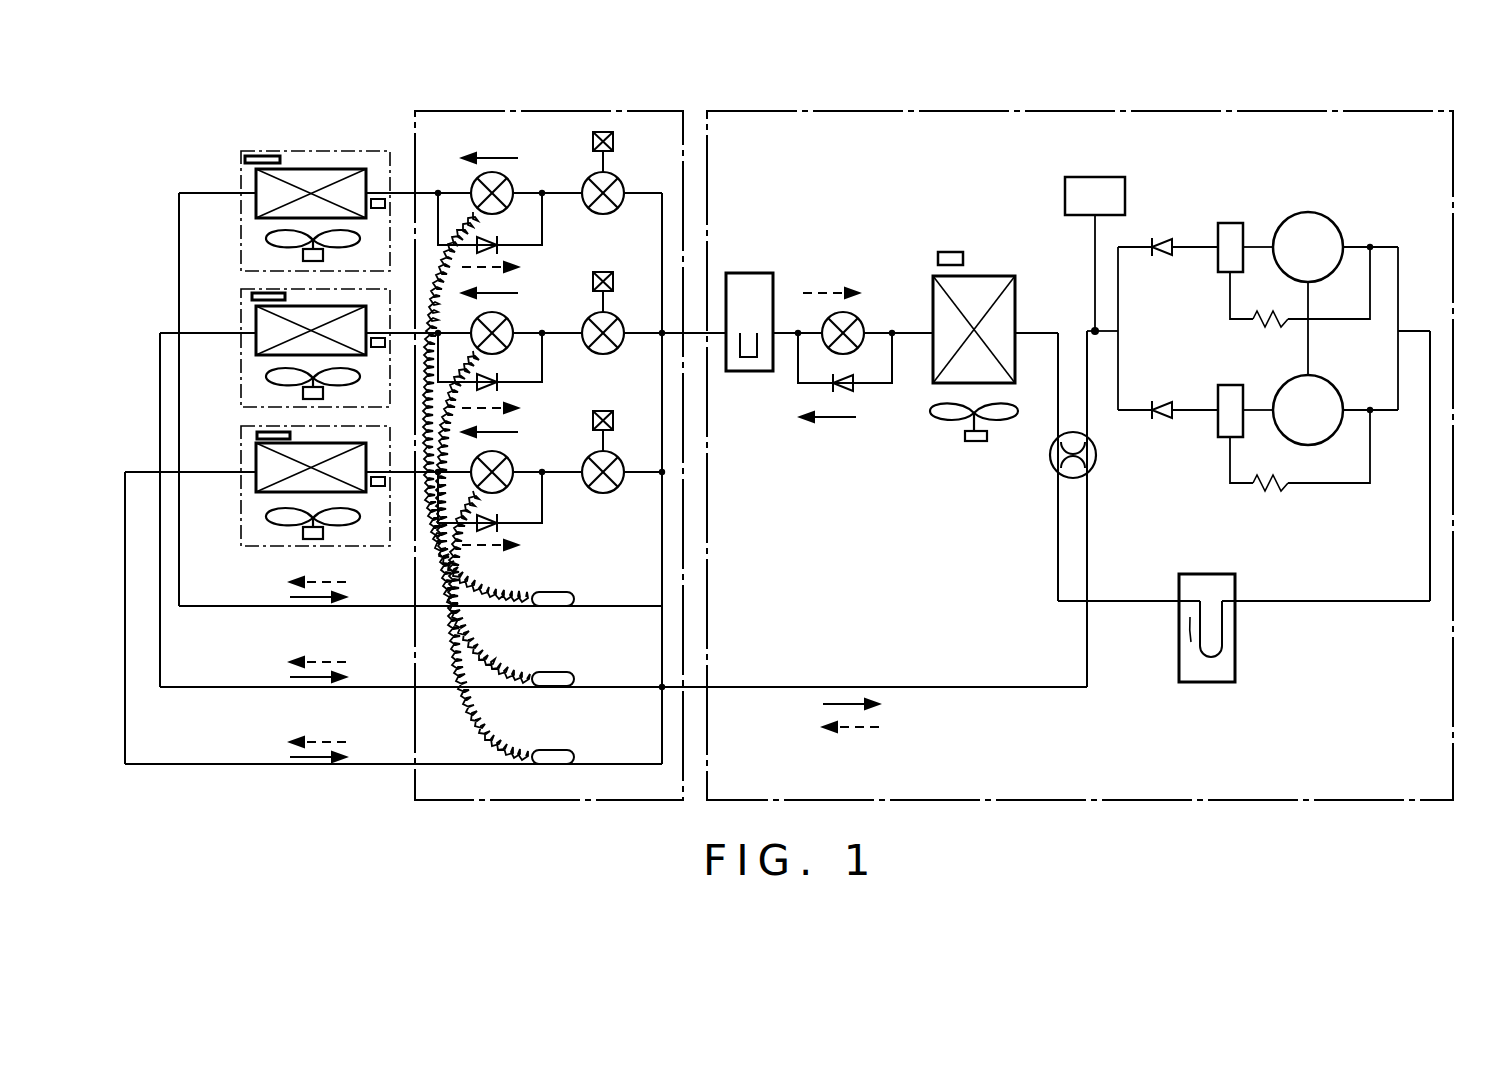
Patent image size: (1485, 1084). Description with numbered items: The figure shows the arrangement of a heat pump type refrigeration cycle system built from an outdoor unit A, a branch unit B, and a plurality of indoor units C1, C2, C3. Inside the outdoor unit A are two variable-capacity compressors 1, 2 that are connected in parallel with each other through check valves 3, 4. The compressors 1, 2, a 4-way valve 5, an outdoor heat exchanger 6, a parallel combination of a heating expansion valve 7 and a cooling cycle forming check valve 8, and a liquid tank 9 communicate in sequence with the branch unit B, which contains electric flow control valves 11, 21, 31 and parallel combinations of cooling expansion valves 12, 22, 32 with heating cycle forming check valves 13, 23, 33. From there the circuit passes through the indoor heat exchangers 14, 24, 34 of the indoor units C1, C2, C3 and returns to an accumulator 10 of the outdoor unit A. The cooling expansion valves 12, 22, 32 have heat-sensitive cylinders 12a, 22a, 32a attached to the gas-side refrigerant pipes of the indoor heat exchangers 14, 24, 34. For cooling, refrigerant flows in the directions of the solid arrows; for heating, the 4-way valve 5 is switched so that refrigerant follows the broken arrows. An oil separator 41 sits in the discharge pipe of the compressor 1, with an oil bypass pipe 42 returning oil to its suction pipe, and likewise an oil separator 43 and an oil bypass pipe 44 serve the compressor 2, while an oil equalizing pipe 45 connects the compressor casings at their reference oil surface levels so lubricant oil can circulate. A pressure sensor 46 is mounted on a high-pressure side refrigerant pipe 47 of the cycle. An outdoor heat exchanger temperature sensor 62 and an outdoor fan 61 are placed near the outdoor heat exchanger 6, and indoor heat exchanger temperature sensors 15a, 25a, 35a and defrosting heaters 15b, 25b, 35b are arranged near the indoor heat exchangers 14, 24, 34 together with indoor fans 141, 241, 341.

The variable-capacity compressor 1 is at (1305, 212).
The variable-capacity compressor 2 is at (1341, 402).
The check valve 3 is at (1163, 237).
The check valve 4 is at (1163, 400).
The 4-way valve 5 is at (1097, 455).
The outdoor heat exchanger 6 is at (1000, 276).
The heating expansion valve 7 is at (862, 320).
The cooling cycle forming check valve 8 is at (858, 390).
The liquid tank 9 is at (750, 273).
The accumulator 10 is at (1235, 632).
The electric flow control valve 11 is at (620, 180).
The cooling expansion valve 12 is at (508, 182).
The heating cycle forming check valve 13 is at (500, 245).
The indoor heat exchanger 14 is at (322, 169).
The indoor heat exchanger temperature sensor 15a is at (378, 199).
The defrosting heater 15b is at (262, 156).
The electric flow control valve 21 is at (620, 320).
The cooling expansion valve 22 is at (508, 323).
The heating cycle forming check valve 23 is at (500, 382).
The indoor heat exchanger 24 is at (256, 341).
The indoor heat exchanger temperature sensor 25a is at (381, 347).
The defrosting heater 25b is at (252, 296).
The electric flow control valve 31 is at (620, 460).
The cooling expansion valve 32 is at (508, 462).
The heating cycle forming check valve 33 is at (500, 523).
The indoor heat exchanger 34 is at (256, 486).
The indoor heat exchanger temperature sensor 35a is at (380, 486).
The defrosting heater 35b is at (257, 436).
The oil separator 41 is at (1230, 223).
The oil bypass pipe 42 is at (1345, 319).
The oil separator 43 is at (1232, 385).
The oil bypass pipe 44 is at (1335, 483).
The oil equalizing pipe 45 is at (1311, 336).
The pressure sensor 46 is at (1092, 177).
The high-pressure side refrigerant pipe 47 is at (1100, 334).
The outdoor fan 61 is at (975, 441).
The outdoor heat exchanger temperature sensor 62 is at (950, 252).
The indoor fan 141 is at (265, 240).
The indoor fan 241 is at (265, 378).
The indoor fan 341 is at (265, 518).
The heat-sensitive cylinder 12a is at (560, 592).
The heat-sensitive cylinder 22a is at (560, 672).
The heat-sensitive cylinder 32a is at (560, 750).
The outdoor unit A is at (830, 111).
The branch unit B is at (588, 111).
The indoor unit C1 is at (241, 181).
The indoor unit C2 is at (241, 321).
The indoor unit C3 is at (241, 464).